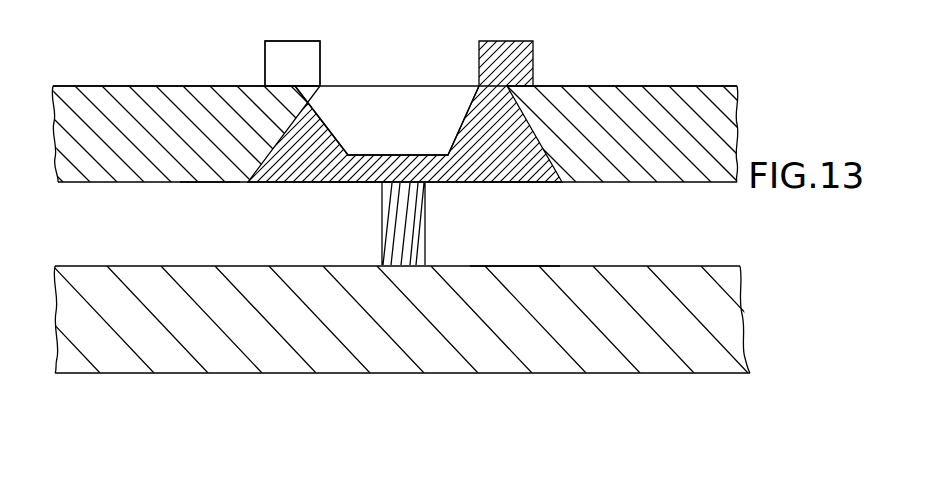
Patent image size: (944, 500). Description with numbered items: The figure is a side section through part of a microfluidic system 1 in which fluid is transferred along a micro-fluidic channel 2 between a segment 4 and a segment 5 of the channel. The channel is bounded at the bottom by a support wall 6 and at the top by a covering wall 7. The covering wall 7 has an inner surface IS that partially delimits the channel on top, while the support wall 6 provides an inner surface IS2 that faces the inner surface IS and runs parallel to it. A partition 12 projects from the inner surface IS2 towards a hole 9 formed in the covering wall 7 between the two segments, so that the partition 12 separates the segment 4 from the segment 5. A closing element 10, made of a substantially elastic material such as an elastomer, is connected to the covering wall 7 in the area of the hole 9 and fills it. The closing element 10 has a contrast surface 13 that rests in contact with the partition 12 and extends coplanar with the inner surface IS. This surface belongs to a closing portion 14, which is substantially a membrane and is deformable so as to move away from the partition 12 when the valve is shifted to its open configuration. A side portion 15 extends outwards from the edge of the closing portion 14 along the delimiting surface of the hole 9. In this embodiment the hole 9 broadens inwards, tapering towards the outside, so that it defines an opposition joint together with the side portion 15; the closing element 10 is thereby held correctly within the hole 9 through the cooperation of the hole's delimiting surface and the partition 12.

The microfluidic system 1 is at (113, 66).
The micro-fluidic channel 2 is at (633, 178).
The segment 4 is at (122, 186).
The segment 5 is at (679, 261).
The support wall 6 is at (613, 365).
The covering wall 7 is at (173, 173).
The hole 9 is at (431, 122).
The closing element 10 is at (282, 28).
The partition 12 is at (393, 237).
The contrast surface 13 is at (436, 188).
The closing portion 14 is at (358, 183).
The side portion 15 is at (510, 165).
The inner surface IS is at (210, 187).
The inner surface IS2 is at (498, 264).